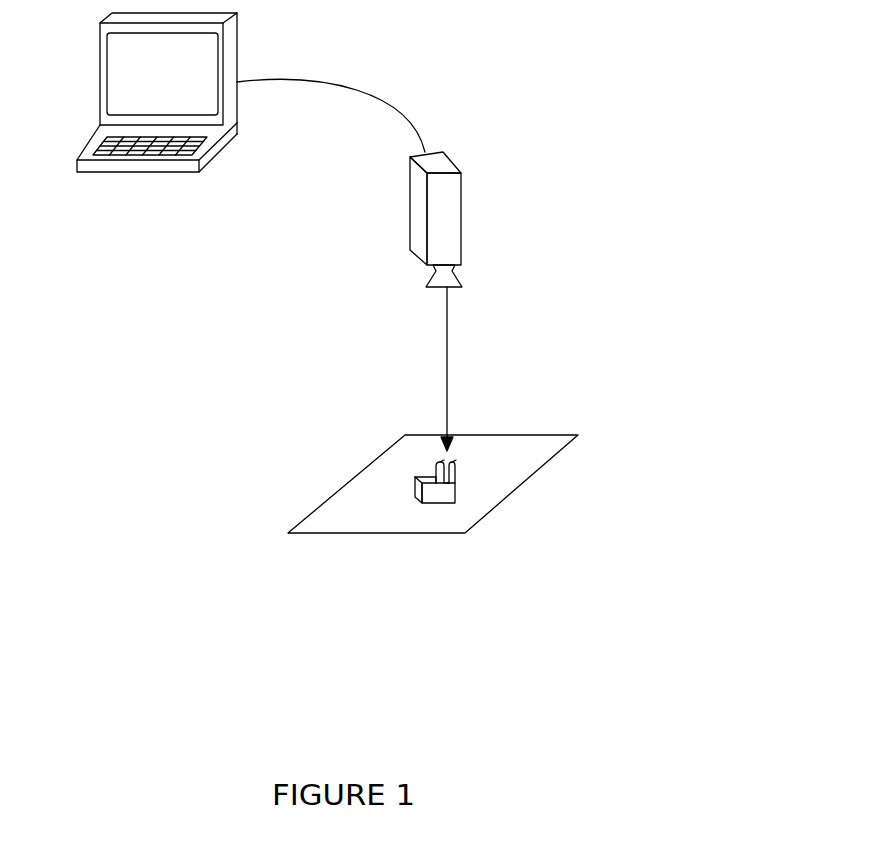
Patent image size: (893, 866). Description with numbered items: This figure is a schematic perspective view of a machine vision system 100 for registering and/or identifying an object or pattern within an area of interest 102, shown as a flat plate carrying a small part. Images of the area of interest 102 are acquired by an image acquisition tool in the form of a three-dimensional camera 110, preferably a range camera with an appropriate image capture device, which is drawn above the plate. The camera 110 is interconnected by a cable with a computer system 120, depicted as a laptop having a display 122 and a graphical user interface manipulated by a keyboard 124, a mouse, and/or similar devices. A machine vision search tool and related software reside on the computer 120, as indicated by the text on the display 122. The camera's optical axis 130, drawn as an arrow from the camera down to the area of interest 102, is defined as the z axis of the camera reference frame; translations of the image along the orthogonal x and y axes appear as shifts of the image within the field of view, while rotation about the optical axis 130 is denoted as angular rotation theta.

The machine vision system 100 is at (703, 226).
The area of interest 102 is at (520, 468).
The three-dimensional camera 110 is at (463, 215).
The computer system 120 is at (223, 115).
The display 122 is at (210, 50).
The keyboard 124 is at (153, 157).
The optical axis 130 is at (447, 353).